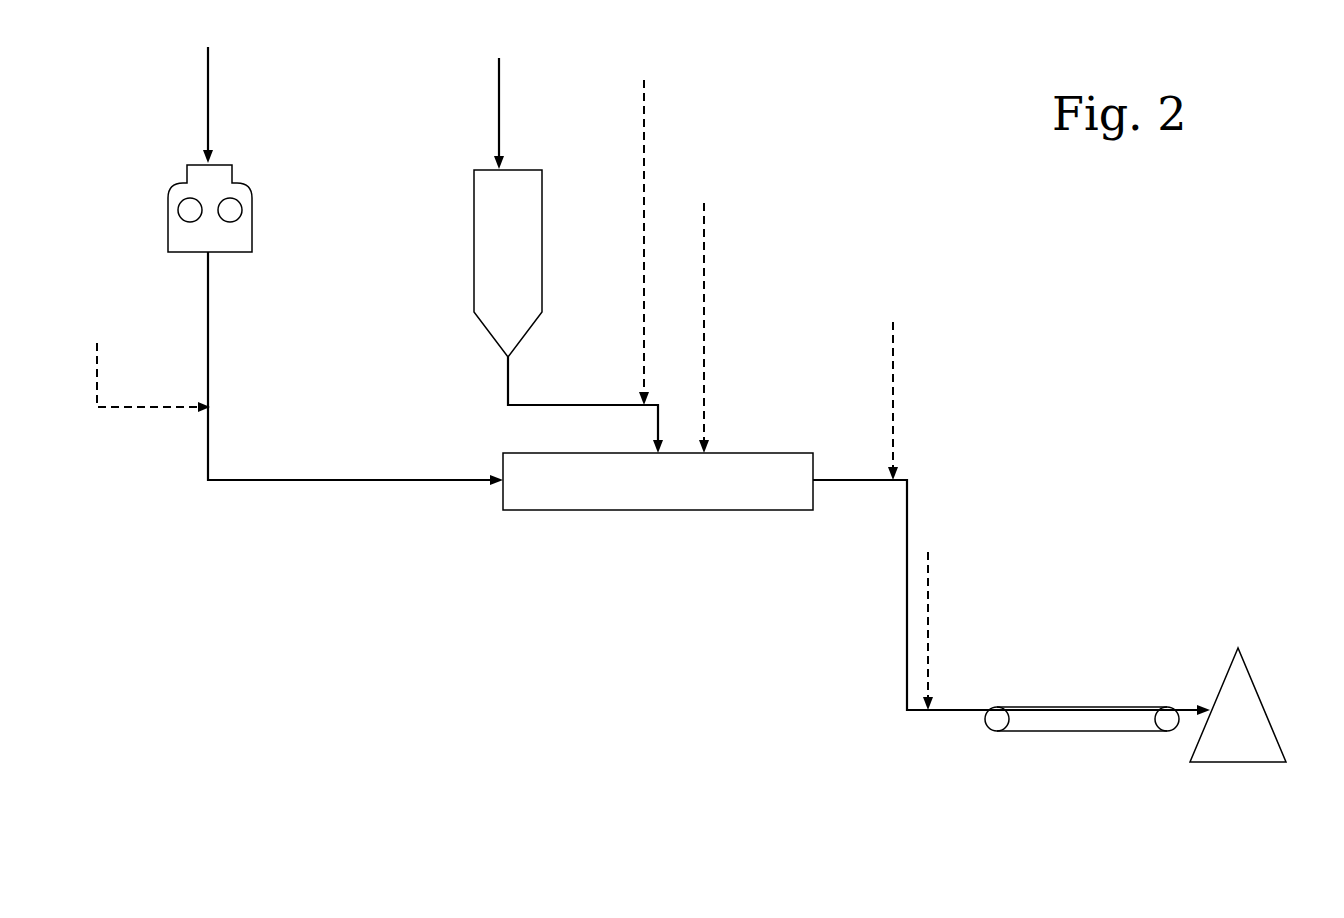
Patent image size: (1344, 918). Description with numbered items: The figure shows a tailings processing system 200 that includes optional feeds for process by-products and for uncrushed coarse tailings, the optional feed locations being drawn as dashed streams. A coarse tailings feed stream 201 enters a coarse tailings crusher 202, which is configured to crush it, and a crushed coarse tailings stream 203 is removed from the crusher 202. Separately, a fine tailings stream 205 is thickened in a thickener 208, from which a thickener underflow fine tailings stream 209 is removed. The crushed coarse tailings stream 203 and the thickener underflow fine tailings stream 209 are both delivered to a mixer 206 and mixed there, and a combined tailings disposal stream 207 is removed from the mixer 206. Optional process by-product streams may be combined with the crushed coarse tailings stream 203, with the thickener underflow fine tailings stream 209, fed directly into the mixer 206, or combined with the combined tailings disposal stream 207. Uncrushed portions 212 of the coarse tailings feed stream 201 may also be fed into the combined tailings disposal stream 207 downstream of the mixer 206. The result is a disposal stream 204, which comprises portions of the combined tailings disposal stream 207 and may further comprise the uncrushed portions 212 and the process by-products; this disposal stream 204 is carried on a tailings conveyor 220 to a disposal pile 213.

The system 200 is at (688, 675).
The coarse tailings feed stream 201 is at (206, 90).
The coarse tailings crusher 202 is at (250, 210).
The crushed coarse tailings stream 203 is at (337, 481).
The disposal stream 204 is at (962, 711).
The fine tailings stream 205 is at (498, 117).
The mixer 206 is at (662, 511).
The combined tailings disposal stream 207 is at (853, 481).
The thickener 208 is at (474, 273).
The thickener underflow fine tailings stream 209 is at (563, 405).
The uncrushed portions of the coarse tailings feed stream 212 is at (929, 620).
The disposal pile 213 is at (1262, 700).
The tailings conveyor 220 is at (1072, 732).